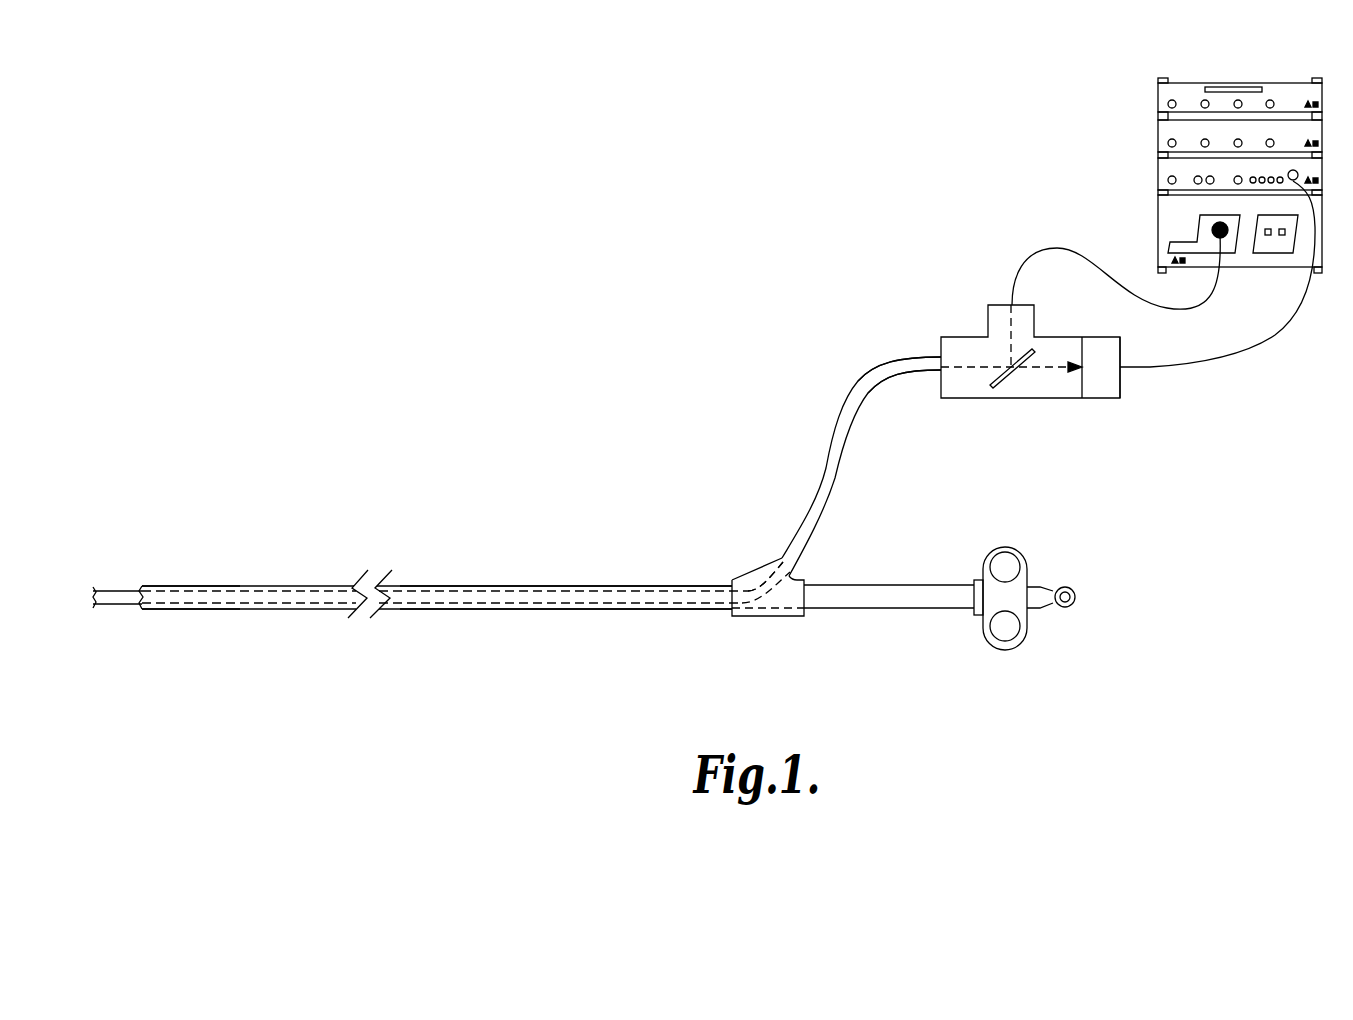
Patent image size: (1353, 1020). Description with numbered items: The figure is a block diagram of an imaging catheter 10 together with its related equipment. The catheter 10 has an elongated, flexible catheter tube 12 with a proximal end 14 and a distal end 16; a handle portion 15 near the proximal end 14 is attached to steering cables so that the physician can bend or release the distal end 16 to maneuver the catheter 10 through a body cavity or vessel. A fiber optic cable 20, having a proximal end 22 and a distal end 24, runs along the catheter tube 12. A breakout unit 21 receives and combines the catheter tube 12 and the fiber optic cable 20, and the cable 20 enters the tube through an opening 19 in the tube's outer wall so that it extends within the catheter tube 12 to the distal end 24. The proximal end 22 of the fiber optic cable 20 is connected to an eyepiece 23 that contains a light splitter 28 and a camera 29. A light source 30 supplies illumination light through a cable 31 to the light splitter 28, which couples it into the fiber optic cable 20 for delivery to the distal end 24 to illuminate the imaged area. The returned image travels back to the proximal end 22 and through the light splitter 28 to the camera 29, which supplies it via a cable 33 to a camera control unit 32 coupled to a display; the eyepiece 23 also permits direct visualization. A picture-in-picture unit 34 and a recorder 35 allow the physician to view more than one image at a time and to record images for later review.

The imaging catheter 10 is at (272, 556).
The catheter tube 12 is at (462, 586).
The proximal end 14 is at (972, 611).
The handle portion 15 is at (1028, 563).
The distal end 16 is at (163, 586).
The opening 19 is at (753, 586).
The fiber optic cable 20 is at (827, 480).
The breakout unit 21 is at (769, 618).
The proximal end 22 is at (937, 357).
The eyepiece 23 is at (952, 337).
The distal end 24 is at (112, 607).
The light splitter 28 is at (1013, 381).
The camera 29 is at (1100, 390).
The light source 30 is at (1158, 231).
The cable 31 is at (1050, 246).
The camera control unit 32 is at (1158, 172).
The cable 33 is at (1228, 358).
The picture-in-picture unit 34 is at (1158, 133).
The recorder 35 is at (1158, 94).